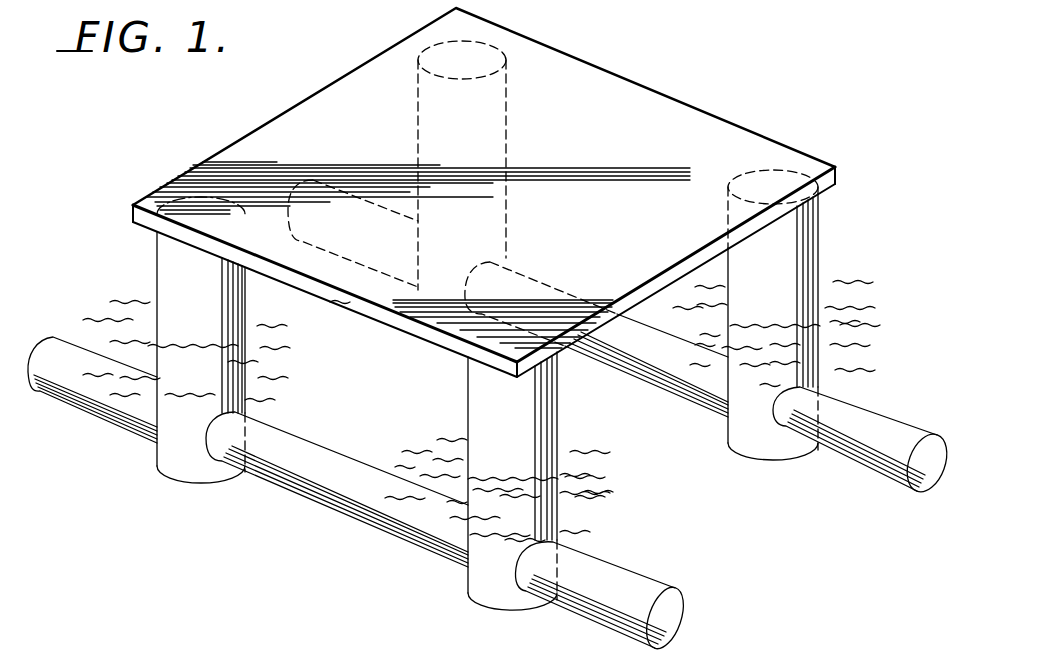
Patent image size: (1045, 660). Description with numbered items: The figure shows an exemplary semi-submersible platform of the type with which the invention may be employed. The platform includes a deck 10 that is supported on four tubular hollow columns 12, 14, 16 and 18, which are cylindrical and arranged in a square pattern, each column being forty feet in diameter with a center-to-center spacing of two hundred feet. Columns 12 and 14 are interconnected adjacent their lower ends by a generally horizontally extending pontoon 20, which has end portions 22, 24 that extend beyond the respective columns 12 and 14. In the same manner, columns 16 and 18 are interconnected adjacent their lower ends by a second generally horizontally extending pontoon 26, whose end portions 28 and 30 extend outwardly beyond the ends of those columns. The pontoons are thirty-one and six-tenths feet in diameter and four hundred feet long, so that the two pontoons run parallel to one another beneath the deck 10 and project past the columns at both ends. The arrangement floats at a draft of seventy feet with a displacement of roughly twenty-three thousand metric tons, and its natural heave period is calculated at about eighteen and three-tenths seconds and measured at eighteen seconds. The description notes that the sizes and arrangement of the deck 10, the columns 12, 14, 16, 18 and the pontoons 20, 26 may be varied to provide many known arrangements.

The deck 10 is at (659, 106).
The column 12 is at (158, 267).
The column 14 is at (478, 588).
The column 16 is at (810, 257).
The column 18 is at (510, 156).
The pontoon 20 is at (340, 510).
The end portion 22 is at (120, 430).
The end portion 24 is at (643, 579).
The pontoon 26 is at (650, 372).
The end portion 28 is at (347, 192).
The end portion 30 is at (886, 420).